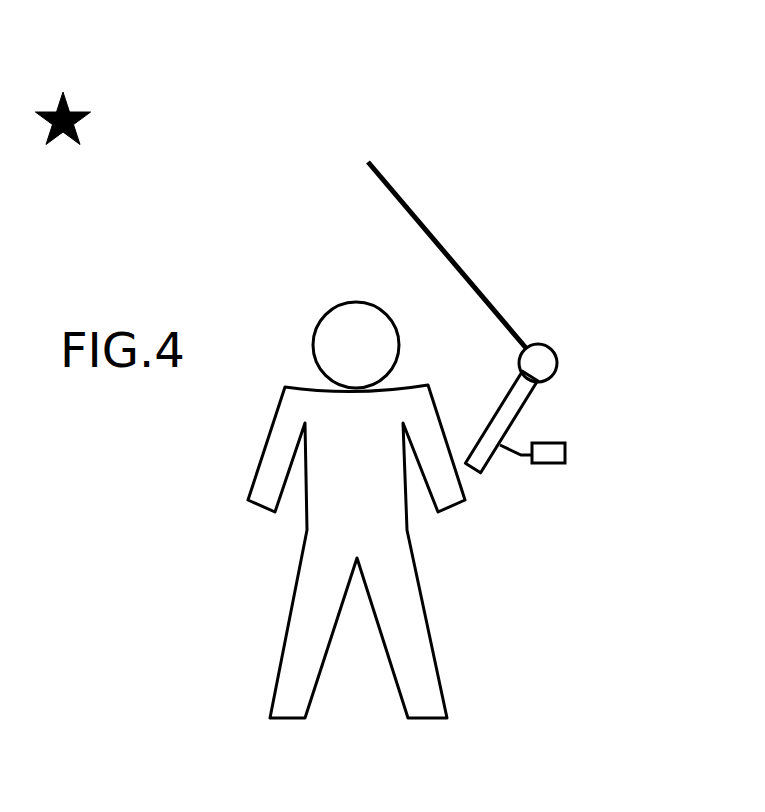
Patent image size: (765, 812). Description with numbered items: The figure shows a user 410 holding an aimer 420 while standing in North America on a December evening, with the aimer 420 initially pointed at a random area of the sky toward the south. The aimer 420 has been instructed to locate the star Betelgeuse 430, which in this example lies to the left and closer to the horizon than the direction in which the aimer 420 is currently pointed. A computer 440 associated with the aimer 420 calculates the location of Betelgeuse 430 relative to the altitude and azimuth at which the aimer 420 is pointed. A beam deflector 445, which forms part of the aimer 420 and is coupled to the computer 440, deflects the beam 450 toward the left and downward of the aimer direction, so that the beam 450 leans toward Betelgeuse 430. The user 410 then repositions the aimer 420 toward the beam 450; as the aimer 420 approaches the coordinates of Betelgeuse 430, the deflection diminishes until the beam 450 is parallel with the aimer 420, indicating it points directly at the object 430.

The user 410 is at (383, 485).
The aimer 420 is at (522, 413).
The star Betelgeuse 430 is at (63, 92).
The computer 440 is at (547, 463).
The beam deflector 445 is at (560, 362).
The beam 450 is at (438, 238).